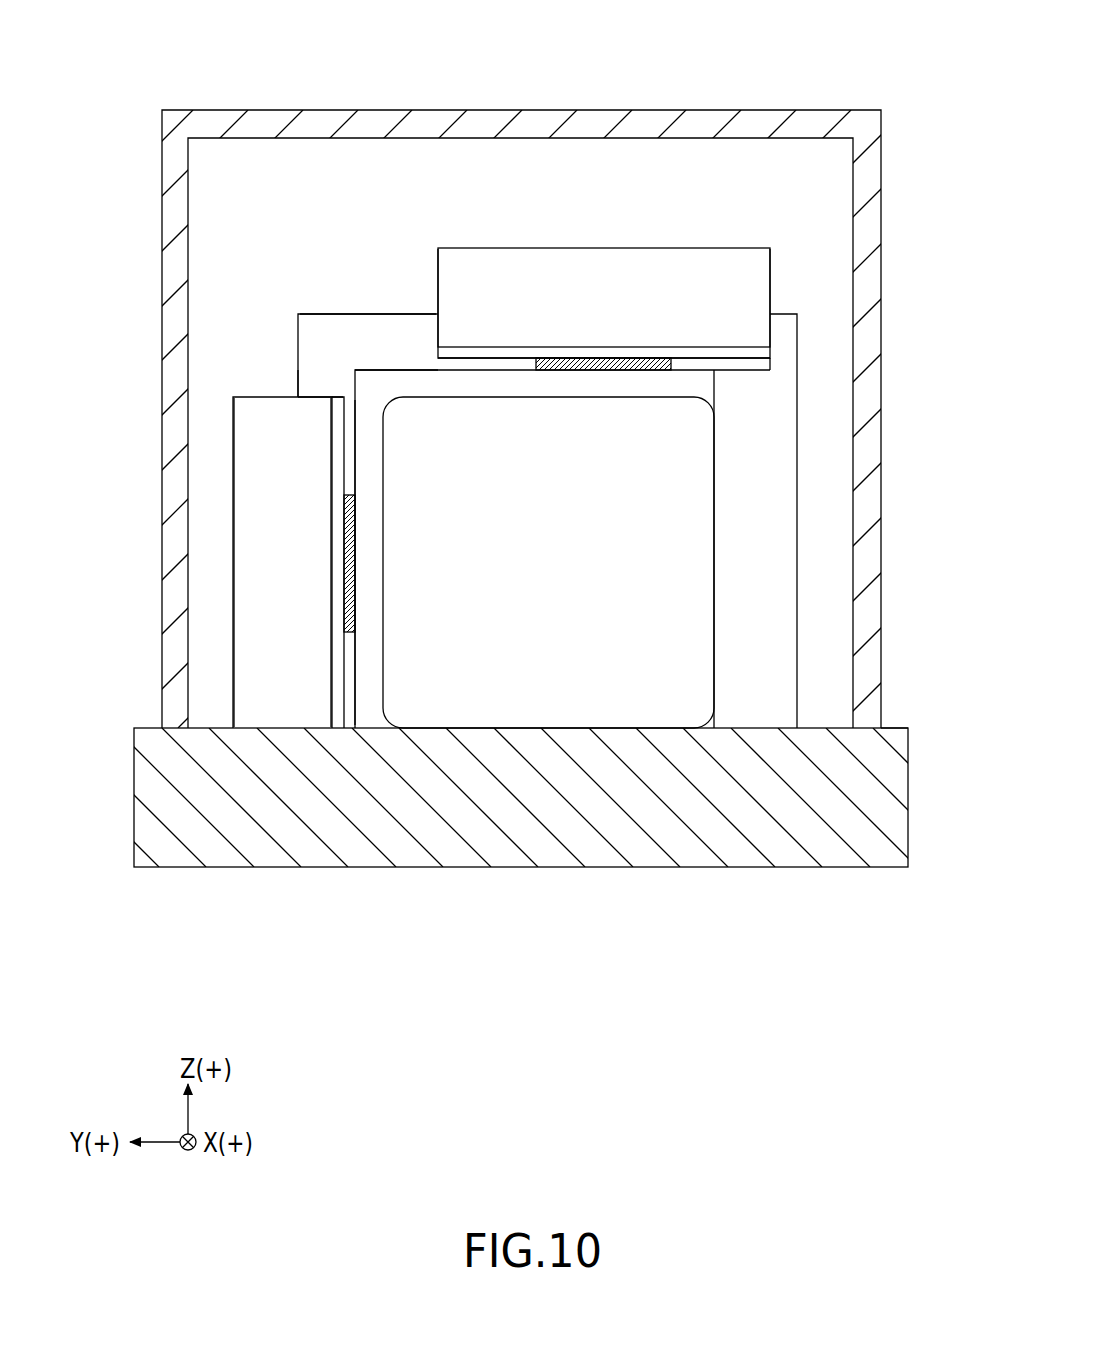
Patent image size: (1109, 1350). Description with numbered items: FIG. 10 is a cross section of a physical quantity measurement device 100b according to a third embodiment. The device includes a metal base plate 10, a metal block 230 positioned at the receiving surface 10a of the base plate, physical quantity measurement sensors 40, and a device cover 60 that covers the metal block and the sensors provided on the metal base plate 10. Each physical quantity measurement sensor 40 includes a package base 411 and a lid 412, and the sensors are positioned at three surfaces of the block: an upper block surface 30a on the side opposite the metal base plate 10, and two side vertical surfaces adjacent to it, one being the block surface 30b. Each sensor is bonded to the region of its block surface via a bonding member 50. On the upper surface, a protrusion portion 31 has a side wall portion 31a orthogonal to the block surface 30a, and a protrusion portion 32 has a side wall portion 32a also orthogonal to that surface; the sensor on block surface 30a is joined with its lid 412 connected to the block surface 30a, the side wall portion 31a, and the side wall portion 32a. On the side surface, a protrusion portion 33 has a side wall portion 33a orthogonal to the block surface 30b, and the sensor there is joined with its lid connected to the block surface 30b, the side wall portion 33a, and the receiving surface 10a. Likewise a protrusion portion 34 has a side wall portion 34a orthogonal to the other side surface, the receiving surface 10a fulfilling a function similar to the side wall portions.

The physical quantity measurement device 100b is at (933, 20).
The metal base plate 10 is at (886, 803).
The receiving surface 10a is at (892, 727).
The device cover 60 is at (877, 594).
The metal block 230 is at (800, 492).
The block surface 30a is at (628, 357).
The block surface 30b is at (345, 548).
The protrusion portion 31 is at (334, 310).
The side wall portion 31a is at (363, 338).
The protrusion portion 32 is at (783, 312).
The side wall portion 32a is at (763, 333).
The protrusion portion 33 is at (295, 385).
The side wall portion 33a is at (322, 380).
The protrusion portion 34 is at (745, 557).
The side wall portion 34a is at (702, 397).
The physical quantity measurement sensor 40 is at (942, 248).
The package base 411 is at (755, 263).
The lid 412 is at (753, 353).
The bonding member 50 is at (565, 357).